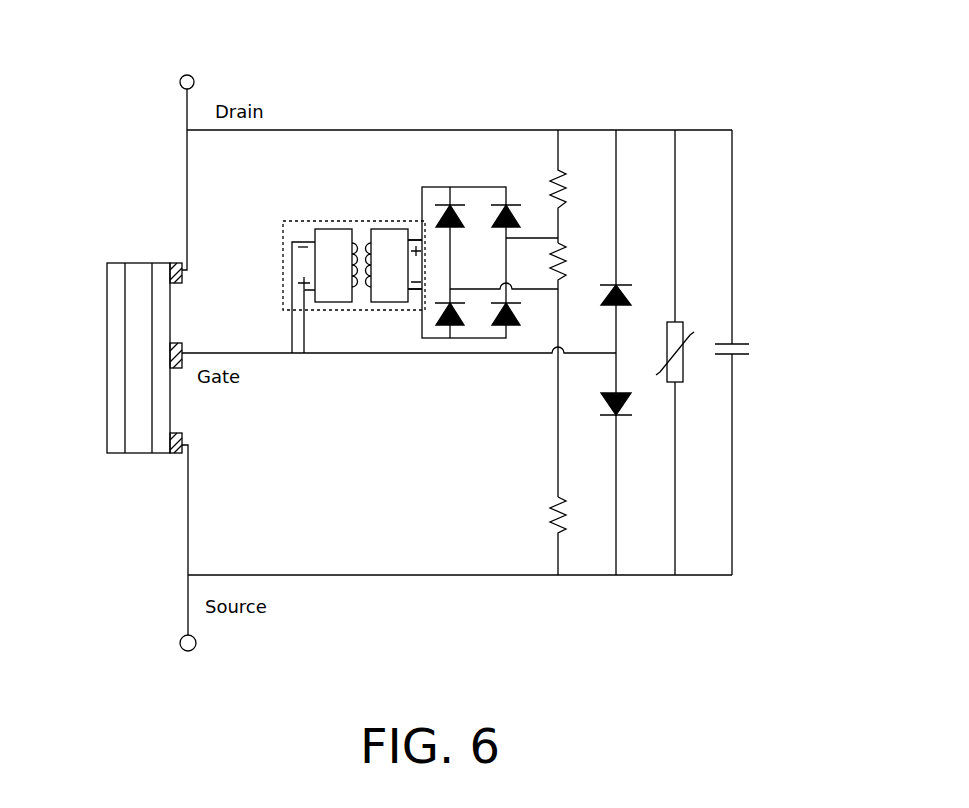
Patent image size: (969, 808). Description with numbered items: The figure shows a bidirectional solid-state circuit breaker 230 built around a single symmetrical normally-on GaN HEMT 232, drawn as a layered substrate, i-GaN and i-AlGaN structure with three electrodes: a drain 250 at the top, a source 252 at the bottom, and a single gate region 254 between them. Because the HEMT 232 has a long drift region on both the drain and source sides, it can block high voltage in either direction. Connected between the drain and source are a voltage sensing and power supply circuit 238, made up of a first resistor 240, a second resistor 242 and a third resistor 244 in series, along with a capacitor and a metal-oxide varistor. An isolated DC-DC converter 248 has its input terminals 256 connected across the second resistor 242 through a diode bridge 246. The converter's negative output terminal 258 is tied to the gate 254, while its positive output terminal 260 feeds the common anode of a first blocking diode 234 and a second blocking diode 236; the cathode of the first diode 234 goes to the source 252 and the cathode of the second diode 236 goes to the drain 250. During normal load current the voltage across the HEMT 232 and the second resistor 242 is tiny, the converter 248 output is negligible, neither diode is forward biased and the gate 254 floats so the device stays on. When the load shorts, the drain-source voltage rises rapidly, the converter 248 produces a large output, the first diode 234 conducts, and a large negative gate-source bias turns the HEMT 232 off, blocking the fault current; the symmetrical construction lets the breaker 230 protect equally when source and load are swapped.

The bidirectional solid-state circuit breaker 230 is at (566, 90).
The symmetrical normally-on HEMT 232 is at (117, 433).
The first blocking diode 234 is at (612, 415).
The second blocking diode 236 is at (618, 306).
The voltage sensing and power supply circuit 238 is at (745, 234).
The first resistor 240 is at (560, 175).
The second resistor 242 is at (560, 243).
The third resistor 244 is at (563, 497).
The diode bridge 246 is at (525, 170).
The isolated DC-DC converter 248 is at (380, 310).
The drain 250 is at (184, 281).
The source 252 is at (182, 437).
The gate region 254 is at (178, 341).
The input terminals 256 is at (418, 290).
The negative output terminal 258 is at (294, 240).
The positive output terminal 260 is at (305, 306).